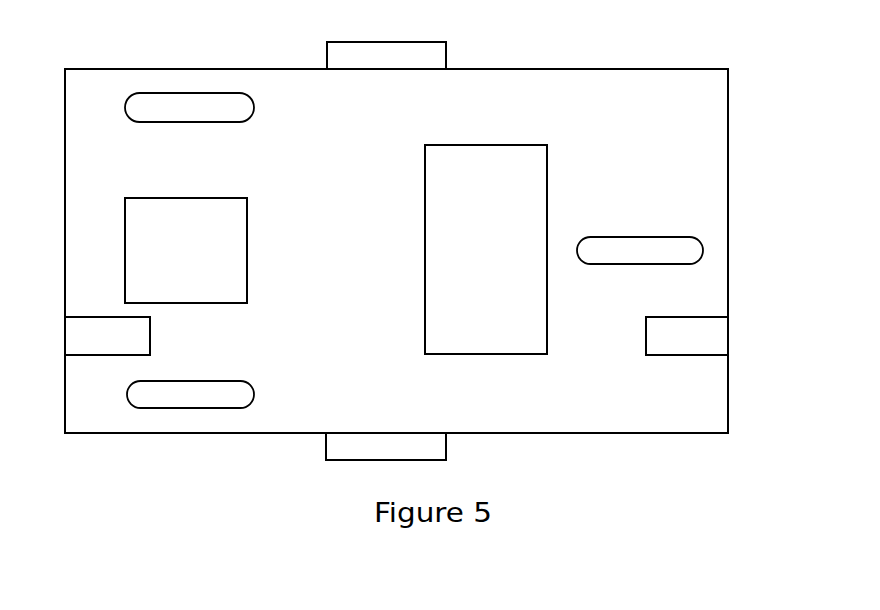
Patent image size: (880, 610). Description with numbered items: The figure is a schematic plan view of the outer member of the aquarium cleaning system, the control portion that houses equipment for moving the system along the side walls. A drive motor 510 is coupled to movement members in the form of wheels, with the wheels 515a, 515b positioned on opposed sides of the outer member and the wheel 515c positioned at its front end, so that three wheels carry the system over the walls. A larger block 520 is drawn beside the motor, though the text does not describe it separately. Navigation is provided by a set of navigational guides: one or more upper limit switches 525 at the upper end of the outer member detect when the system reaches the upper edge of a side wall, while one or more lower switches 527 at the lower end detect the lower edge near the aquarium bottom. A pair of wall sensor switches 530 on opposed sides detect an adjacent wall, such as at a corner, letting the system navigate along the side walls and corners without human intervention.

The drive motor 510 is at (186, 250).
The wheel 515a is at (189, 107).
The wheel 515b is at (190, 394).
The wheel 515c is at (640, 250).
The second component block 520 is at (486, 249).
The upper limit switch 525 is at (386, 55).
The lower switch 527 is at (386, 446).
The wall sensor switch 530 is at (396, 336).